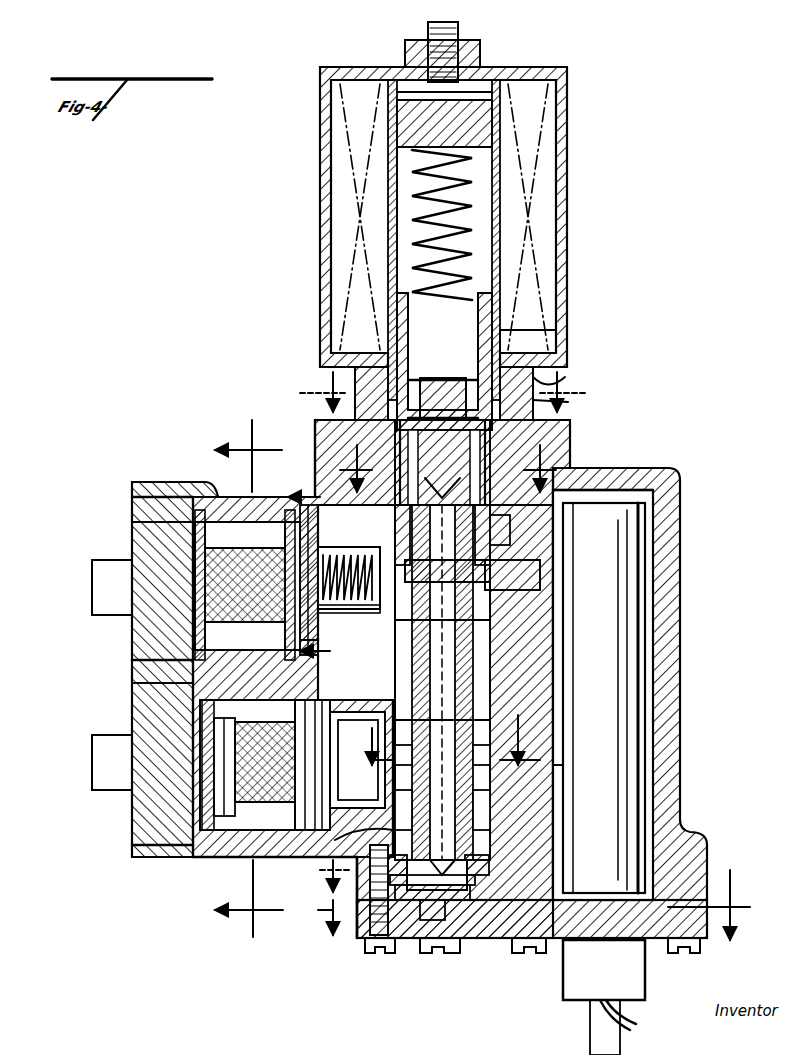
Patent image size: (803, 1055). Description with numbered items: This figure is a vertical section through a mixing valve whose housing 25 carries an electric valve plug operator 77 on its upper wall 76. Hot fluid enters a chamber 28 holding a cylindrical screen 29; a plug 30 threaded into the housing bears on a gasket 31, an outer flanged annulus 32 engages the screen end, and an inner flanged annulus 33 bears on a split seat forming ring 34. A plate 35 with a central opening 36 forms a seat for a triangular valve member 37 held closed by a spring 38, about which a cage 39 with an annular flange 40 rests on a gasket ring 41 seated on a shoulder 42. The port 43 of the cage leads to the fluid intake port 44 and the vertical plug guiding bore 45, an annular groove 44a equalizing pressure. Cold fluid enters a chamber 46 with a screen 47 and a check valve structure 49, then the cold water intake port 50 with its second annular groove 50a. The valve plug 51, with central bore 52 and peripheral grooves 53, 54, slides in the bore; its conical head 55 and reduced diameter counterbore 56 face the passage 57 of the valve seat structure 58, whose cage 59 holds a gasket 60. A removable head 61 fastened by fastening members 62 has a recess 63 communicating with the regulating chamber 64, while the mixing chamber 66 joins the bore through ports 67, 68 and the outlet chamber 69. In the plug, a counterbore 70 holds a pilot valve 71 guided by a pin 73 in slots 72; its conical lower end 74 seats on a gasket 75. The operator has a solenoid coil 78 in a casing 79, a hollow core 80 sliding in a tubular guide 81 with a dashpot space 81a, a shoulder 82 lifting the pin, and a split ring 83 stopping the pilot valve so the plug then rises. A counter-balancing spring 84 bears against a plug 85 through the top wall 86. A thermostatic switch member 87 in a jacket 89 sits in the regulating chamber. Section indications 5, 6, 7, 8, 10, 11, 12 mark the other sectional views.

The section line 5- 5 is at (248, 685).
The section line 6- 6 is at (439, 736).
The section line 7- 7 is at (476, 876).
The section line 8- 8 is at (492, 905).
The valve body / section line 10- 10 is at (381, 679).
The section line 11- 11 is at (326, 580).
The section line 12- 12 is at (438, 392).
The valve housing 25 is at (150, 480).
The chamber 28 is at (228, 492).
The strainer or screen 29 is at (193, 690).
The plug 30 is at (132, 524).
The gasket 31 is at (193, 650).
The flanged annulus 32 is at (193, 540).
The flanged annulus 33 is at (300, 520).
The split seat forming ring 34 is at (300, 500).
The plate 35 is at (285, 540).
The central opening 36 is at (300, 590).
The triangular valve member 37 is at (360, 612).
The spring 38 is at (375, 610).
The cage 39 is at (372, 612).
The annular flange 40 is at (310, 500).
The gasket ring 41 is at (300, 643).
The shoulder 42 is at (300, 450).
The central opening or port 43 is at (447, 574).
The fluid intake port 44 is at (475, 600).
The annular groove 44a is at (520, 545).
The vertical plug guiding bore 45 is at (500, 562).
The chamber 46 is at (220, 858).
The screen or strainer 47 is at (112, 838).
The check valve structure 49 is at (315, 857).
The cold water intake port 50 is at (385, 780).
The second annular groove 50a is at (364, 827).
The valve plug 51 is at (470, 665).
The central bore 52 is at (470, 700).
The peripheral groove 53 is at (552, 620).
The peripheral groove 54 is at (553, 766).
The conical head 55 is at (485, 845).
The reduced diameter counterbore 56 is at (462, 900).
The central port or passage 57 is at (410, 905).
The valve seat structure 58 is at (489, 862).
The cage or holder 59 is at (372, 930).
The gasket or seat forming member 60 is at (480, 900).
The removable plate or head 61 is at (565, 940).
The fastening members 62 is at (683, 955).
The recess 63 is at (428, 925).
The regulating chamber 64 is at (650, 660).
The mixing chamber 66 is at (550, 722).
The port 67 is at (490, 570).
The port 68 is at (475, 755).
The outlet chamber 69 is at (322, 928).
The counterbore 70 is at (549, 378).
The pilot valve 71 is at (560, 444).
The upwardly extending slots 72 is at (357, 372).
The pilot guiding pin 73 is at (528, 344).
The conical lower end 74 is at (442, 682).
The seat forming gasket 75 is at (610, 470).
The upper wall 76 is at (600, 467).
The electric valve plug operator 77 is at (570, 243).
The solenoid coil 78 is at (555, 215).
The casing or housing 79 is at (560, 175).
The hollow core 80 is at (530, 340).
The tubular guide or sleeve 81 is at (392, 235).
The space or passage 81a is at (500, 310).
The shoulder 82 is at (536, 408).
The split ring 83 is at (395, 362).
The counter-balancing spring 84 is at (410, 208).
The plug 85 is at (475, 98).
The top wall 86 is at (355, 72).
The thermostatic switch member 87 is at (645, 596).
The jacket or casing 89 is at (650, 726).